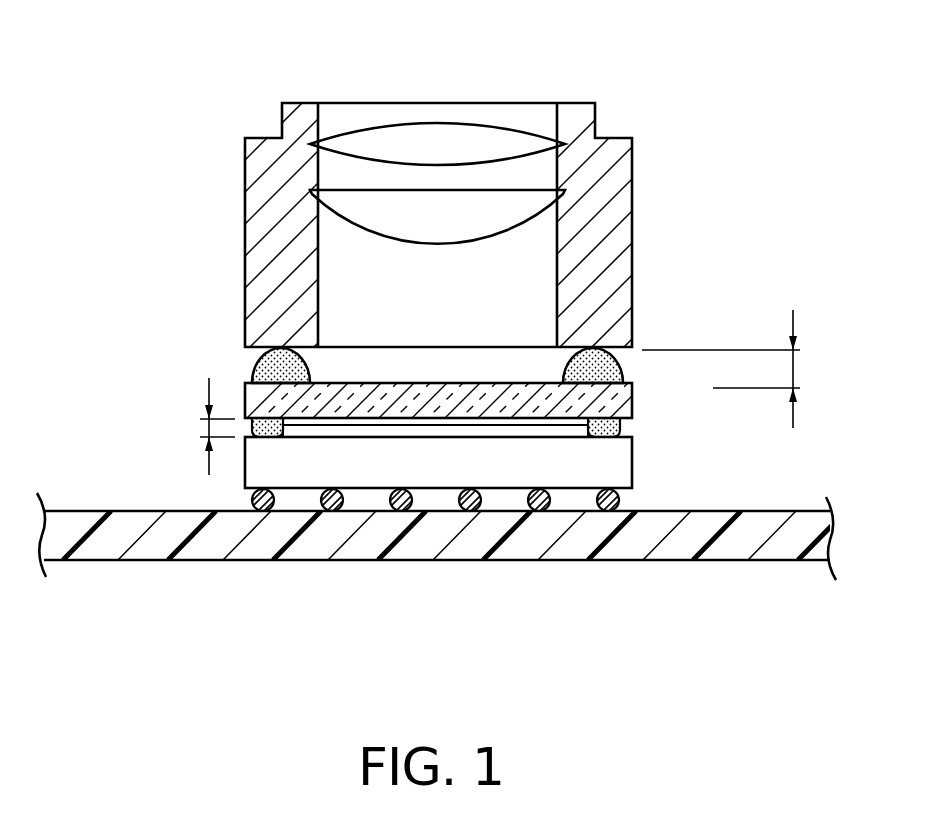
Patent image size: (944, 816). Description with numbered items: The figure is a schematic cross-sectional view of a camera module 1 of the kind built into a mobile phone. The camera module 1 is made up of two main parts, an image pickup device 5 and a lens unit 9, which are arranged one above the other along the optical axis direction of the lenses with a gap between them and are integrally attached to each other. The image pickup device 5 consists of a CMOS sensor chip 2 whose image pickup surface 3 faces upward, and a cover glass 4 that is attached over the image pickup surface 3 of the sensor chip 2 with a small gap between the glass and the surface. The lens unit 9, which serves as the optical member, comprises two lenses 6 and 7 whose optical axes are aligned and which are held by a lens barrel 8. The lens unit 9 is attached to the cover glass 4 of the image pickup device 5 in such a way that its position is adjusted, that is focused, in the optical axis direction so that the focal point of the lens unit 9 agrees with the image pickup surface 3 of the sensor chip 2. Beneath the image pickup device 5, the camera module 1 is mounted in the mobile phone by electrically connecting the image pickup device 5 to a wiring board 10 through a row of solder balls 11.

The camera module 1 is at (222, 87).
The CMOS sensor chip 2 is at (632, 465).
The image pickup surface 3 is at (393, 432).
The cover glass 4 is at (632, 407).
The image pickup device 5 is at (697, 388).
The lens 6 is at (553, 147).
The lens 7 is at (558, 200).
The lens barrel 8 is at (605, 250).
The lens unit 9 is at (680, 135).
The wiring board 10 is at (155, 545).
The solder balls 11 is at (332, 511).